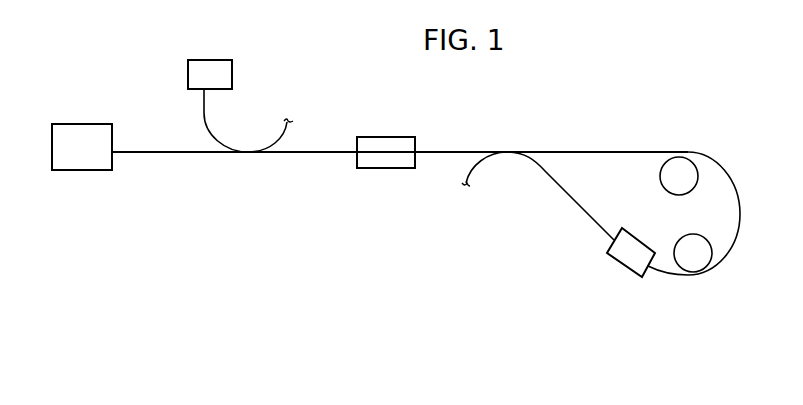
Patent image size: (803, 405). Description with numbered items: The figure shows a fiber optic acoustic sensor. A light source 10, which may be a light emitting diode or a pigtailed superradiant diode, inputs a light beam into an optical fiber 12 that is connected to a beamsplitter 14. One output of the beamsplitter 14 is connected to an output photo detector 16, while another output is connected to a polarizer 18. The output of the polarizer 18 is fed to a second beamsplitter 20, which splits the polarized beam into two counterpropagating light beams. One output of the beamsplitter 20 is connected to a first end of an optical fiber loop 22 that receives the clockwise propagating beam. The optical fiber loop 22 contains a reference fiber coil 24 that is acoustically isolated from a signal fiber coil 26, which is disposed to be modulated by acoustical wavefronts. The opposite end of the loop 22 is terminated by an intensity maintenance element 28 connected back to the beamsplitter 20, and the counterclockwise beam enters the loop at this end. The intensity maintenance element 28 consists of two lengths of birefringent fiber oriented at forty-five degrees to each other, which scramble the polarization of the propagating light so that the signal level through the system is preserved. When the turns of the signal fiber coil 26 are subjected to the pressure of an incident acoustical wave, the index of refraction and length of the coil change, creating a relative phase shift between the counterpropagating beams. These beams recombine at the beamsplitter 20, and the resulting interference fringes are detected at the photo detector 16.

The light source 10 is at (88, 163).
The optical fiber 12 is at (178, 152).
The beamsplitter 14 is at (247, 152).
The output photo detector 16 is at (225, 67).
The polarizer 18 is at (388, 165).
The beamsplitter 20 is at (505, 152).
The optical fiber loop 22 is at (633, 203).
The reference fiber coil 24 is at (677, 152).
The signal fiber coil 26 is at (700, 272).
The intensity maintenance element 28 is at (622, 268).